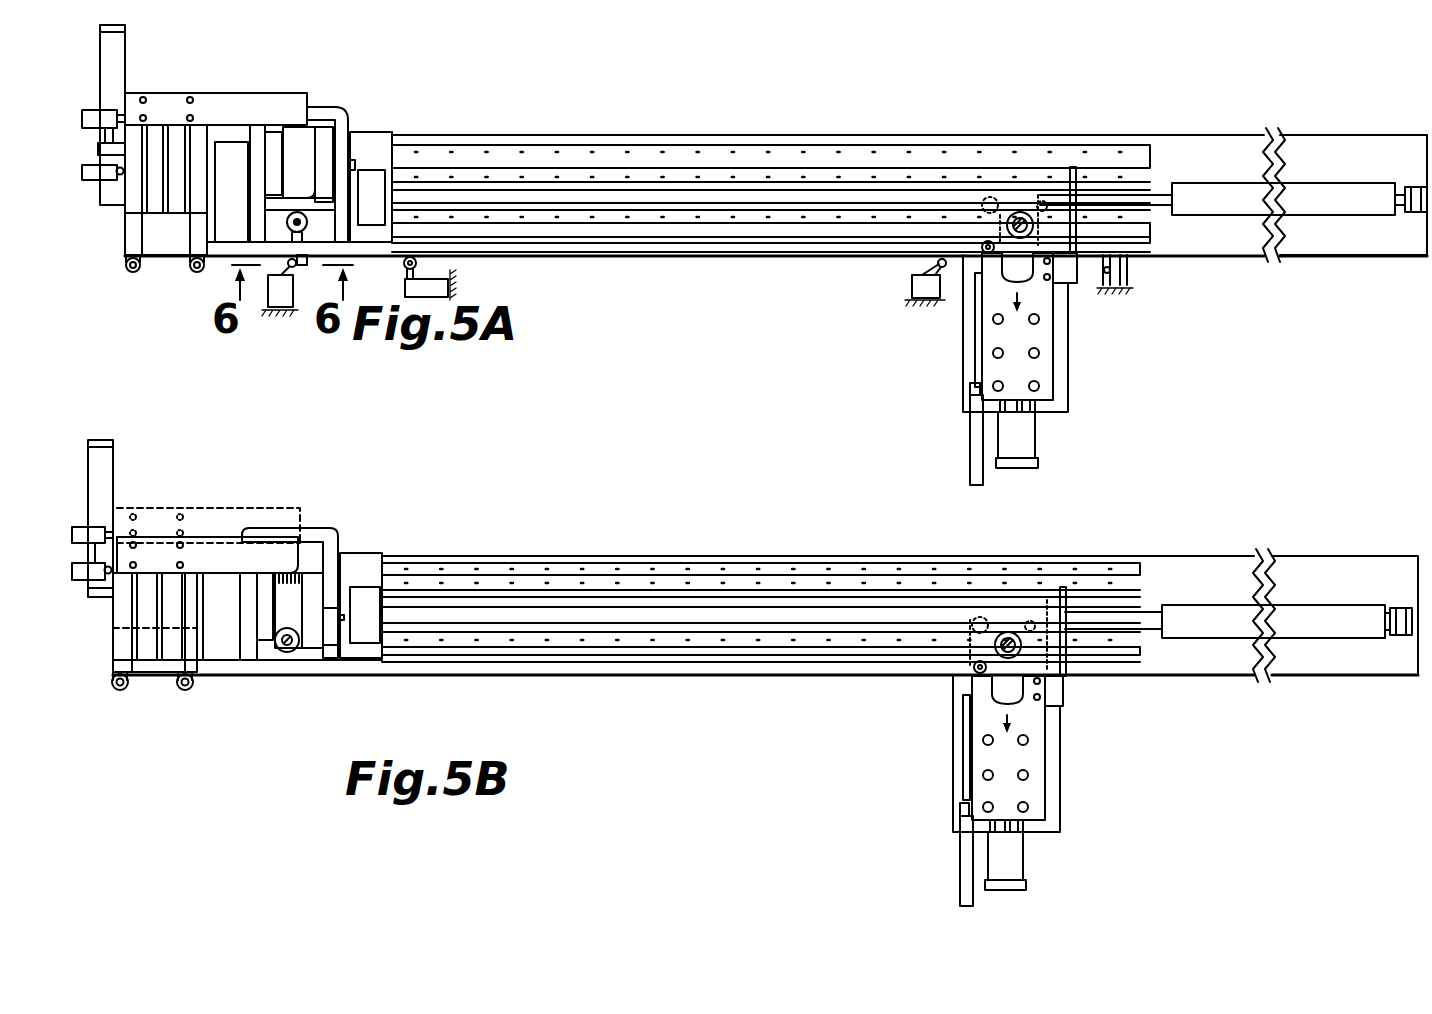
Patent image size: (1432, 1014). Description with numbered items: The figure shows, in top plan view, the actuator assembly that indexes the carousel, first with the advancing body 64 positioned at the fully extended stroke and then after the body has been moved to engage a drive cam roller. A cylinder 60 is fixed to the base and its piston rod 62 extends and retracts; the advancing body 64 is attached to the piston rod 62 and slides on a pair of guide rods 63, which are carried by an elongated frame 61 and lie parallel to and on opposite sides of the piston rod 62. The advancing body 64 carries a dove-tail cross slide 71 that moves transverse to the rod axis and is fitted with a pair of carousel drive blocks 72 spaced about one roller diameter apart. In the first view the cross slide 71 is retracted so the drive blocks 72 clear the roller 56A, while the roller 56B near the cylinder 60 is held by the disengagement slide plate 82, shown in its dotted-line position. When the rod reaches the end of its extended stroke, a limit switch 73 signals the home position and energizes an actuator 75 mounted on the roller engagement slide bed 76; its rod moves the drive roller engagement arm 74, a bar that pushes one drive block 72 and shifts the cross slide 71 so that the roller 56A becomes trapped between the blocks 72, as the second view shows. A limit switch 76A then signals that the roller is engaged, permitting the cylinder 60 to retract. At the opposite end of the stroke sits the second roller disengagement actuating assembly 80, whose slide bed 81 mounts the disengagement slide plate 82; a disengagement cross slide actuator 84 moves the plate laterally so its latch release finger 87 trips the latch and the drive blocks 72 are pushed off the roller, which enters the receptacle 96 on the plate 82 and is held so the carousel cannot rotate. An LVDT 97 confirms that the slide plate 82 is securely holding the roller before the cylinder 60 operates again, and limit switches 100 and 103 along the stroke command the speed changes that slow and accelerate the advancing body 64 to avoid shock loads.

In FIG. 5A, the roller 56A is at (306, 216).
In FIG. 5B, the roller 56A is at (287, 652).
In FIG. 5A, the roller 56B is at (1017, 212).
In FIG. 5B, the roller 56B is at (1010, 632).
In FIG. 5A, the cylinder 60 is at (1318, 192).
In FIG. 5B, the cylinder 60 is at (1195, 615).
In FIG. 5A, the elongated frame 61 is at (1222, 247).
In FIG. 5B, the elongated frame 61 is at (785, 560).
In FIG. 5A, the piston rod 62 is at (755, 190).
In FIG. 5B, the piston rod 62 is at (675, 612).
In FIG. 5B, the guide rods 63 is at (533, 582).
In FIG. 5B, the advancing body 64 is at (306, 527).
In FIG. 5A, the cross slide 71 is at (300, 147).
In FIG. 5B, the cross slide 71 is at (288, 600).
In FIG. 5A, the carousel drive blocks 72 is at (271, 148).
In FIG. 5B, the carousel drive blocks 72 is at (263, 617).
In FIG. 5A, the limit switch 73 is at (284, 304).
In FIG. 5A, the drive roller engagement arm 74 is at (222, 103).
In FIG. 5B, the drive roller engagement arm 74 is at (204, 553).
In FIG. 5A, the actuator 75 is at (115, 60).
In FIG. 5B, the actuator 75 is at (105, 458).
In FIG. 5A, the roller engagement slide bed 76 is at (123, 203).
In FIG. 5B, the roller engagement slide bed 76 is at (113, 620).
In FIG. 5A, the limit switch 76A is at (88, 181).
In FIG. 5B, the limit switch 76A is at (78, 582).
In FIG. 5A, the second roller disengagement actuating assembly 80 is at (1025, 441).
In FIG. 5B, the second roller disengagement actuating assembly 80 is at (1016, 746).
In FIG. 5B, the slide bed 81 is at (1062, 815).
In FIG. 5A, the disengagement slide plate 82 is at (992, 298).
In FIG. 5B, the disengagement slide plate 82 is at (987, 760).
In FIG. 5B, the disengagement cross slide actuator 84 is at (1013, 857).
In FIG. 5B, the latch release finger 87 is at (1066, 692).
In FIG. 5A, the receptacle 96 is at (1012, 276).
In FIG. 5A, the LVDT 97 is at (975, 437).
In FIG. 5B, the LVDT 97 is at (962, 857).
In FIG. 5A, the limit switch 100 is at (433, 277).
In FIG. 5A, the limit switch 103 is at (912, 290).